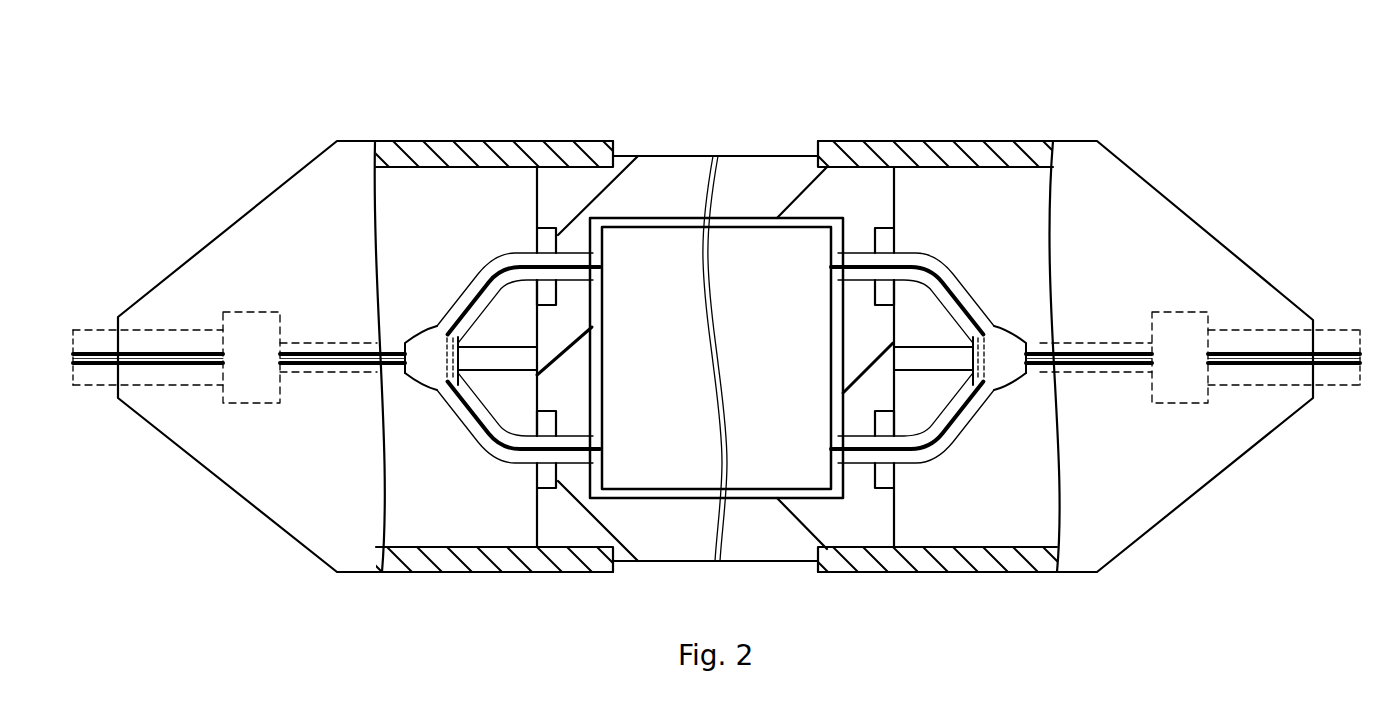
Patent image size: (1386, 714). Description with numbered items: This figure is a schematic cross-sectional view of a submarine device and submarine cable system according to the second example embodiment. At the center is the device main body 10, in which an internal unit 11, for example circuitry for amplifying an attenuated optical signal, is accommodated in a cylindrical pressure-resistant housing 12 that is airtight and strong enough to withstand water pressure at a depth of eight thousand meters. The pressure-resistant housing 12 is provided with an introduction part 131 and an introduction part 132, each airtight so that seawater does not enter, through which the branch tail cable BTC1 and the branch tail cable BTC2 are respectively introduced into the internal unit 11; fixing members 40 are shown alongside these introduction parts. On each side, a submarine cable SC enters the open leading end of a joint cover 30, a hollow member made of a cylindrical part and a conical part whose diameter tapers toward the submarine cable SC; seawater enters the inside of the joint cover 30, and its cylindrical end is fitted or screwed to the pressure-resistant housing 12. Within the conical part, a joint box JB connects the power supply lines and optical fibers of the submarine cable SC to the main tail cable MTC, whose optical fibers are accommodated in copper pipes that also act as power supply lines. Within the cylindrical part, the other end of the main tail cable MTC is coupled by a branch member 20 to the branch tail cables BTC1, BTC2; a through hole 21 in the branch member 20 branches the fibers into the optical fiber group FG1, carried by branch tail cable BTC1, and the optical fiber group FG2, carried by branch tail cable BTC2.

The device main body 10 is at (691, 136).
The internal unit 11 is at (763, 232).
The pressure-resistant housing 12 is at (735, 156).
The branch member 20 is at (428, 335).
The through hole 21 is at (433, 382).
The joint cover 30 is at (918, 141).
The fixing member 40 is at (546, 362).
The introduction part 131 is at (530, 284).
The introduction part 132 is at (532, 436).
The submarine cable SC is at (97, 330).
The joint box JB is at (246, 312).
The main tail cable MTC is at (305, 343).
The branch tail cable BTC1 is at (464, 280).
The branch tail cable BTC2 is at (466, 428).
The optical fiber group FG1 is at (509, 255).
The optical fiber group FG2 is at (504, 464).